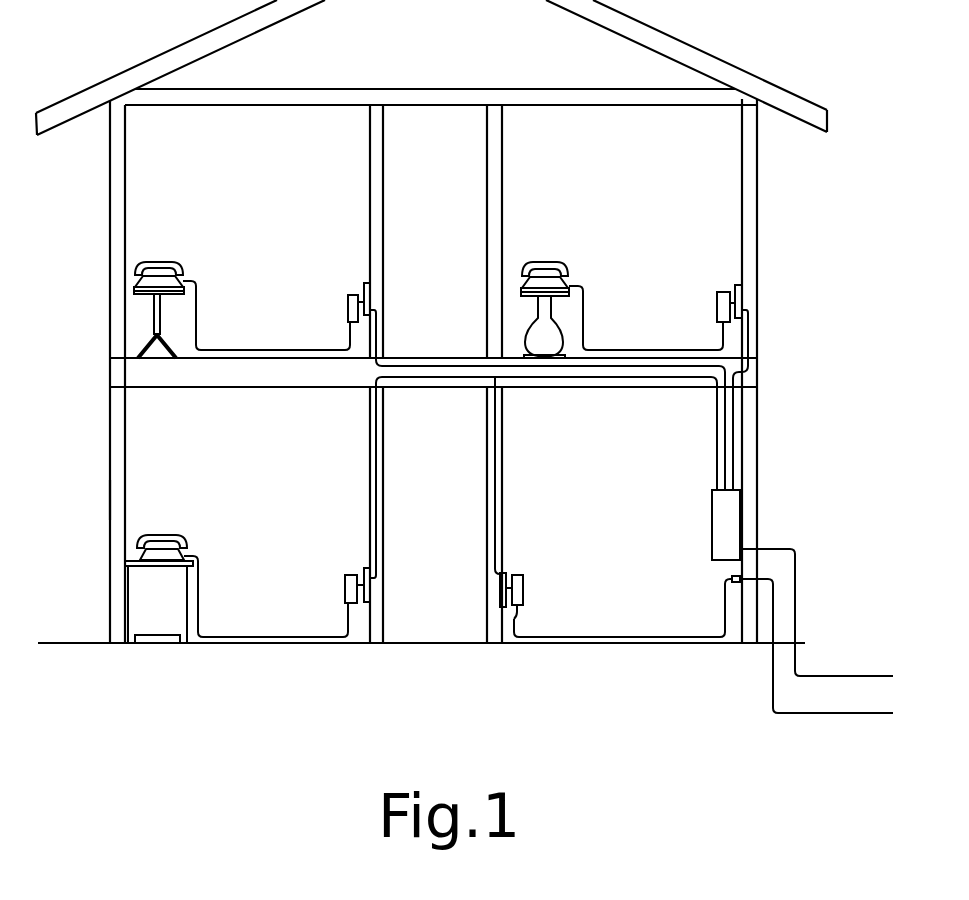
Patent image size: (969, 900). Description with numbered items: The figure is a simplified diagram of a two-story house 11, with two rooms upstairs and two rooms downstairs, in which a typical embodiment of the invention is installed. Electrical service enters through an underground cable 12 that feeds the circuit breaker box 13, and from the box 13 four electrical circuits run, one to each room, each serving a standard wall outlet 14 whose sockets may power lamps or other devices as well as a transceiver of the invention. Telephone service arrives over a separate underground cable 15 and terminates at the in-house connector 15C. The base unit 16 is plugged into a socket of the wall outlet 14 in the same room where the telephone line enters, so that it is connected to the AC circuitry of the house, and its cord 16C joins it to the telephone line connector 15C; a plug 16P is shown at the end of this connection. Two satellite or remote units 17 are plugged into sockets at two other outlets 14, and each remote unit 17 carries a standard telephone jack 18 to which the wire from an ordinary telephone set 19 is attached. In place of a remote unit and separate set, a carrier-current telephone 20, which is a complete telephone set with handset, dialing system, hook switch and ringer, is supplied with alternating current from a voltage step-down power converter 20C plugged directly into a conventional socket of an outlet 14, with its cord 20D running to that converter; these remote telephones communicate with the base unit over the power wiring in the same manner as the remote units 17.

The two-story house 11 is at (104, 497).
The underground cable 12 is at (797, 672).
The circuit breaker box 13 is at (712, 513).
The wall outlet 14 is at (366, 285).
The underground cable 15 is at (771, 712).
The in-house connector 15C is at (731, 579).
The base unit 16 is at (523, 592).
The plug 16P is at (515, 615).
The cord 16C is at (604, 637).
The remote unit 17 is at (348, 310).
The telephone jack 18 is at (346, 350).
The telephone set 19 is at (180, 268).
The carrier-current telephone 20 is at (558, 284).
The voltage step-down power converter 20C is at (717, 308).
The telephone cord 20D is at (580, 350).